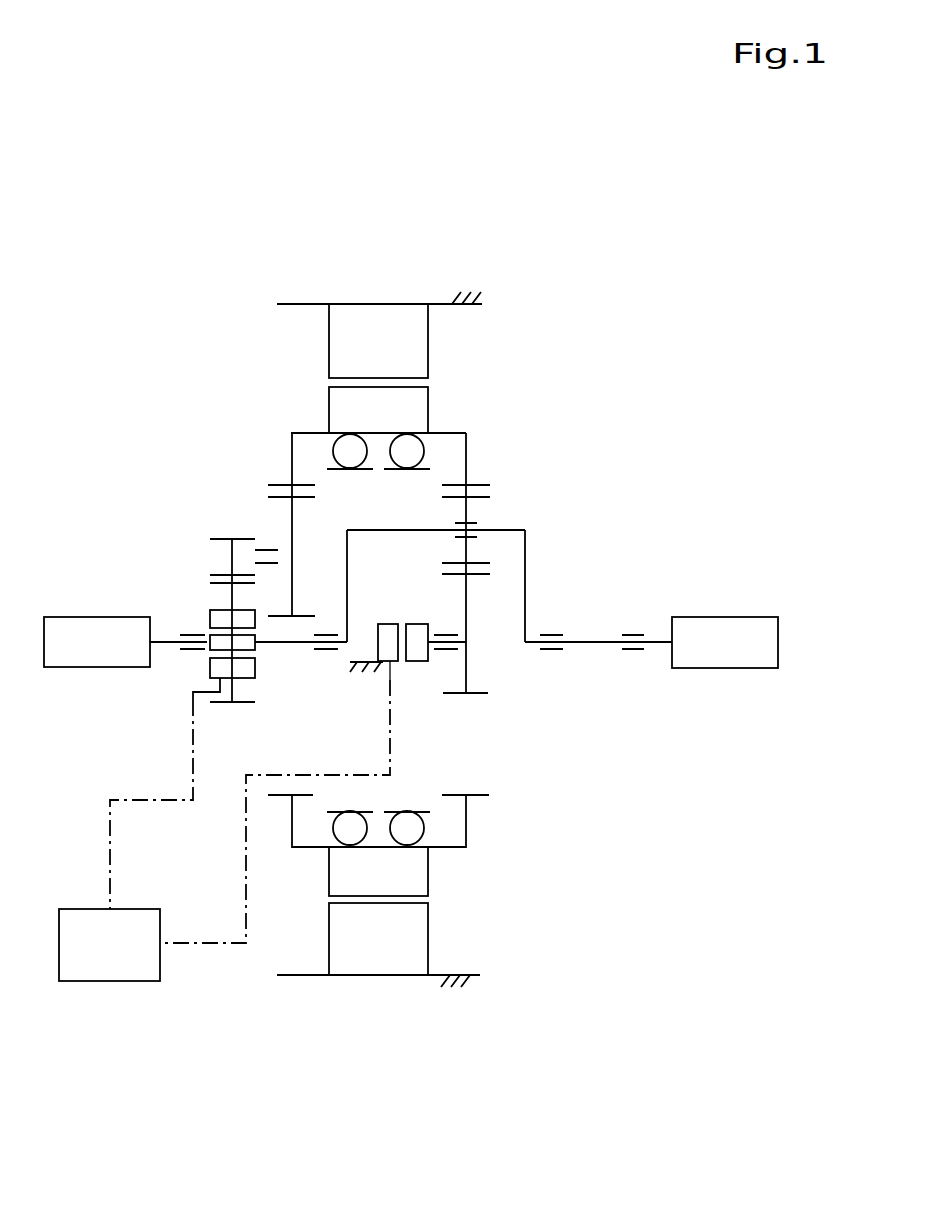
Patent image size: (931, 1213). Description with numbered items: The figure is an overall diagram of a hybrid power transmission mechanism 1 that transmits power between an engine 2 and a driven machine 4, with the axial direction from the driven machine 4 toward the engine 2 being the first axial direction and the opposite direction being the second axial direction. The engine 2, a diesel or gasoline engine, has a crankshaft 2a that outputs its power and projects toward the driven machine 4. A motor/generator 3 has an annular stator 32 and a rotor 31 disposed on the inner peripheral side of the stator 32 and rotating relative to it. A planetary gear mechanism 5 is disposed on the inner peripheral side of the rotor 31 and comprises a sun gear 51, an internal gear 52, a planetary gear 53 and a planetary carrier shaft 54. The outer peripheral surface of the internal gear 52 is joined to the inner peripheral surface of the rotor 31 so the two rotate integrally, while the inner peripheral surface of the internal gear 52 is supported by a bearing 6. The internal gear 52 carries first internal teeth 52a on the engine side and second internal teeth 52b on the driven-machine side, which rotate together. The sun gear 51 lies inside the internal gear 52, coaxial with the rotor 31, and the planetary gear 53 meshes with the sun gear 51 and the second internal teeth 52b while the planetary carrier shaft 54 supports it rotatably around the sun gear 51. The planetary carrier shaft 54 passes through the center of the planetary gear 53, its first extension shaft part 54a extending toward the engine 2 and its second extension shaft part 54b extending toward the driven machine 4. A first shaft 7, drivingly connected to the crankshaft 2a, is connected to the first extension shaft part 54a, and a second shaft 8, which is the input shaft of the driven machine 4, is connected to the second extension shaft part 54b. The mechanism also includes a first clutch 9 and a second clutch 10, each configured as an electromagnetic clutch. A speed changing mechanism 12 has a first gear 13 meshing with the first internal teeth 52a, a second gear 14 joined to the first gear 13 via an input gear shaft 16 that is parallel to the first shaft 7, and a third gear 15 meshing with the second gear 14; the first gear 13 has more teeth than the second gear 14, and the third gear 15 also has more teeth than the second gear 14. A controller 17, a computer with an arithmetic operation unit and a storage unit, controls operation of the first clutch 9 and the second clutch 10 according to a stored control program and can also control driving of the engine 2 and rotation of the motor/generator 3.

The hybrid power transmission mechanism 1 is at (163, 259).
The engine 2 is at (68, 667).
The crankshaft 2a is at (168, 640).
The motor/generator 3 is at (434, 362).
The rotor 31 is at (435, 408).
The stator 32 is at (428, 337).
The driven machine 4 is at (748, 668).
The planetary gear mechanism 5 is at (517, 437).
The sun gear 51 is at (473, 700).
The internal gear 52 is at (311, 433).
The first internal teeth 52a is at (265, 490).
The second internal teeth 52b is at (490, 490).
The planetary gear 53 is at (469, 549).
The planetary carrier shaft 54 is at (545, 559).
The first extension shaft part 54a is at (393, 530).
The second extension shaft part 54b is at (502, 530).
The bearing 6 is at (335, 826).
The first shaft 7 is at (207, 652).
The second shaft 8 is at (596, 645).
The first clutch 9 is at (276, 669).
The second clutch 10 is at (411, 685).
The speed changing mechanism 12 is at (195, 557).
The first gear 13 is at (290, 512).
The second gear 14 is at (220, 538).
The third gear 15 is at (220, 703).
The input gear shaft 16 is at (288, 555).
The controller 17 is at (97, 981).